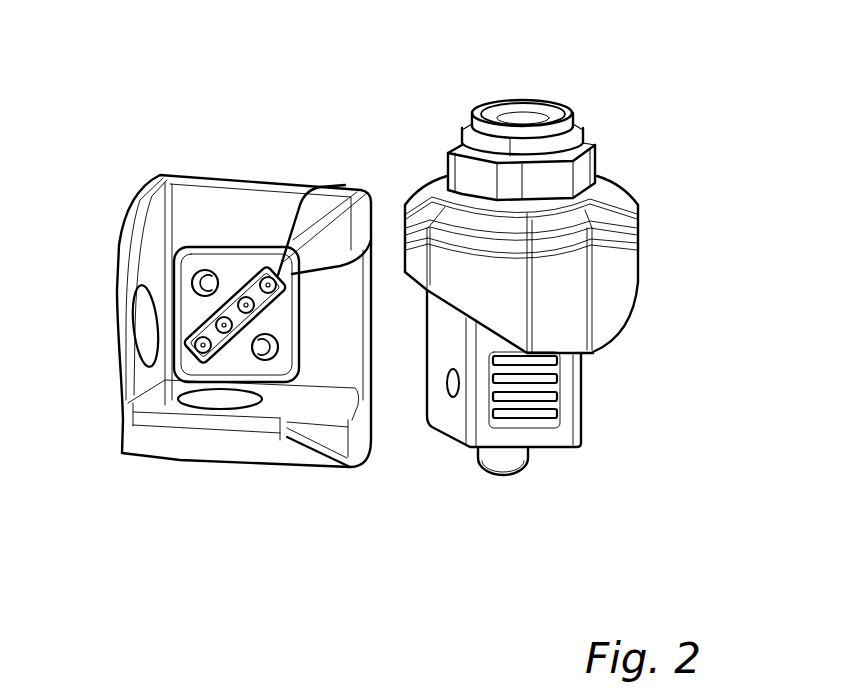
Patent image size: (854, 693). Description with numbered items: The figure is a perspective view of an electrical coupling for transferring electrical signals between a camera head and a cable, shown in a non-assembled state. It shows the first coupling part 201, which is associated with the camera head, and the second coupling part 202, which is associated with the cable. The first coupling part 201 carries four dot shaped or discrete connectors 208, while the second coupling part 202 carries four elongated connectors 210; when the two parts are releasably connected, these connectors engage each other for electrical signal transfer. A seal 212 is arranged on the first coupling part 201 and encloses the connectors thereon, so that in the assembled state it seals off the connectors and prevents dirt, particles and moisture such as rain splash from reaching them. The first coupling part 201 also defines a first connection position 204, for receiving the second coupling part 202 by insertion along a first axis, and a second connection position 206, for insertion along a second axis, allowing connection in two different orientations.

The first coupling part 201 is at (229, 363).
The second coupling part 202 is at (589, 287).
The first connection position 204 is at (229, 324).
The second connection position 206 is at (328, 360).
The dot shaped connectors 208 is at (246, 297).
The elongated connectors 210 is at (548, 357).
The seal 212 is at (293, 380).